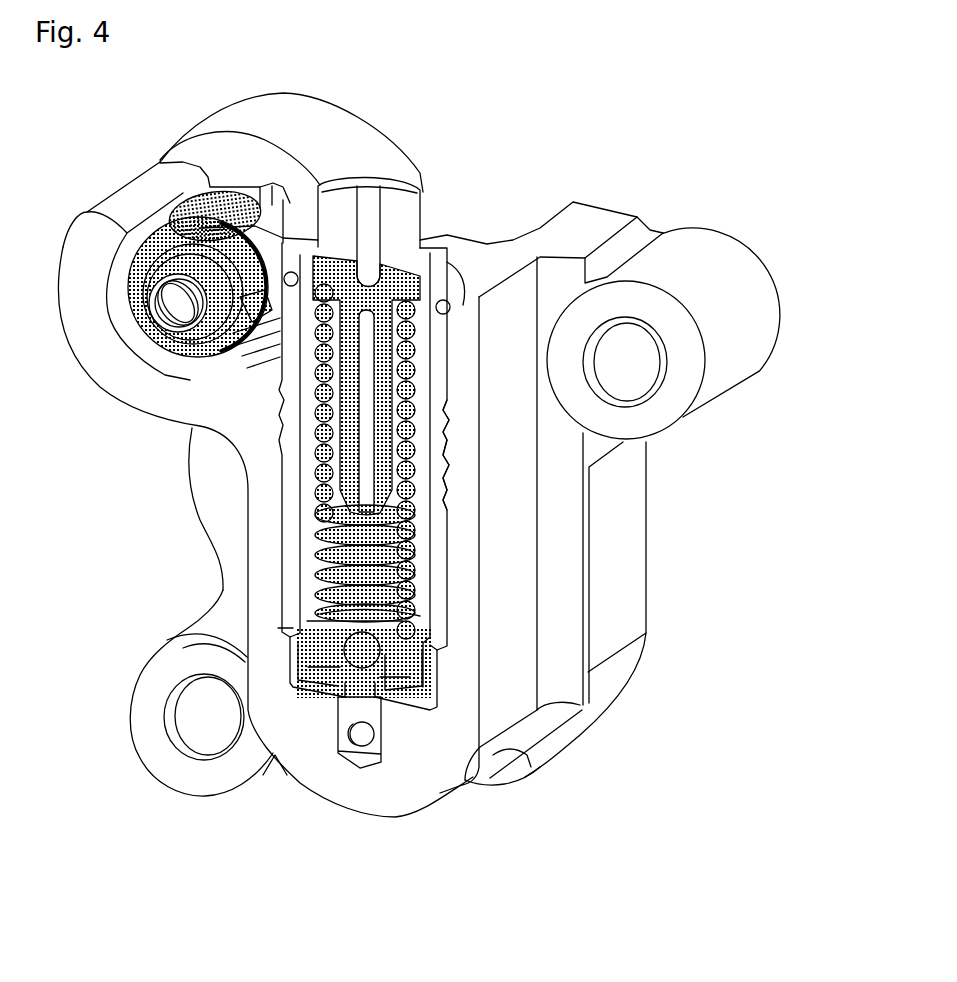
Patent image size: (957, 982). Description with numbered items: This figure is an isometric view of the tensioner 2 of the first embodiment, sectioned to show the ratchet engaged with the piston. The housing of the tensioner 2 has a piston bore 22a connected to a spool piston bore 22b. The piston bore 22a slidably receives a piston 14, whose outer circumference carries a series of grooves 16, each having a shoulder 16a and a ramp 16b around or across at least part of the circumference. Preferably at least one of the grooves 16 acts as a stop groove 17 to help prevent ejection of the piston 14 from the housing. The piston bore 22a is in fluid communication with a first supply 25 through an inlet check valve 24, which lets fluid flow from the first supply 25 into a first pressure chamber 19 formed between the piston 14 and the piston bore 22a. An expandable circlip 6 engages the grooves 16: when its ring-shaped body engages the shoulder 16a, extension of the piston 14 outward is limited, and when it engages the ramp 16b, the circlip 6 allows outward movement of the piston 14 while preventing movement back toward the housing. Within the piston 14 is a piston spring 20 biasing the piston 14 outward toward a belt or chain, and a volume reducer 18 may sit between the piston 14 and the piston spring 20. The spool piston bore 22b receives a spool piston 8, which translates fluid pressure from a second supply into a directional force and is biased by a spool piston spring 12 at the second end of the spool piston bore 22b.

The tensioner 2 is at (398, 78).
The expandable circlip 6 is at (267, 313).
The spool piston 8 is at (170, 220).
The spool piston spring 12 is at (158, 323).
The piston 14 is at (400, 188).
The grooves 16 is at (443, 428).
The shoulder 16a is at (282, 368).
The ramp 16b is at (280, 385).
The stop groove 17 is at (443, 490).
The volume reducer 18 is at (402, 290).
The first pressure chamber 19 is at (300, 570).
The piston spring 20 is at (320, 497).
The piston bore 22a is at (467, 620).
The spool piston bore 22b is at (183, 218).
The inlet check valve 24 is at (348, 668).
The first supply 25 is at (365, 737).